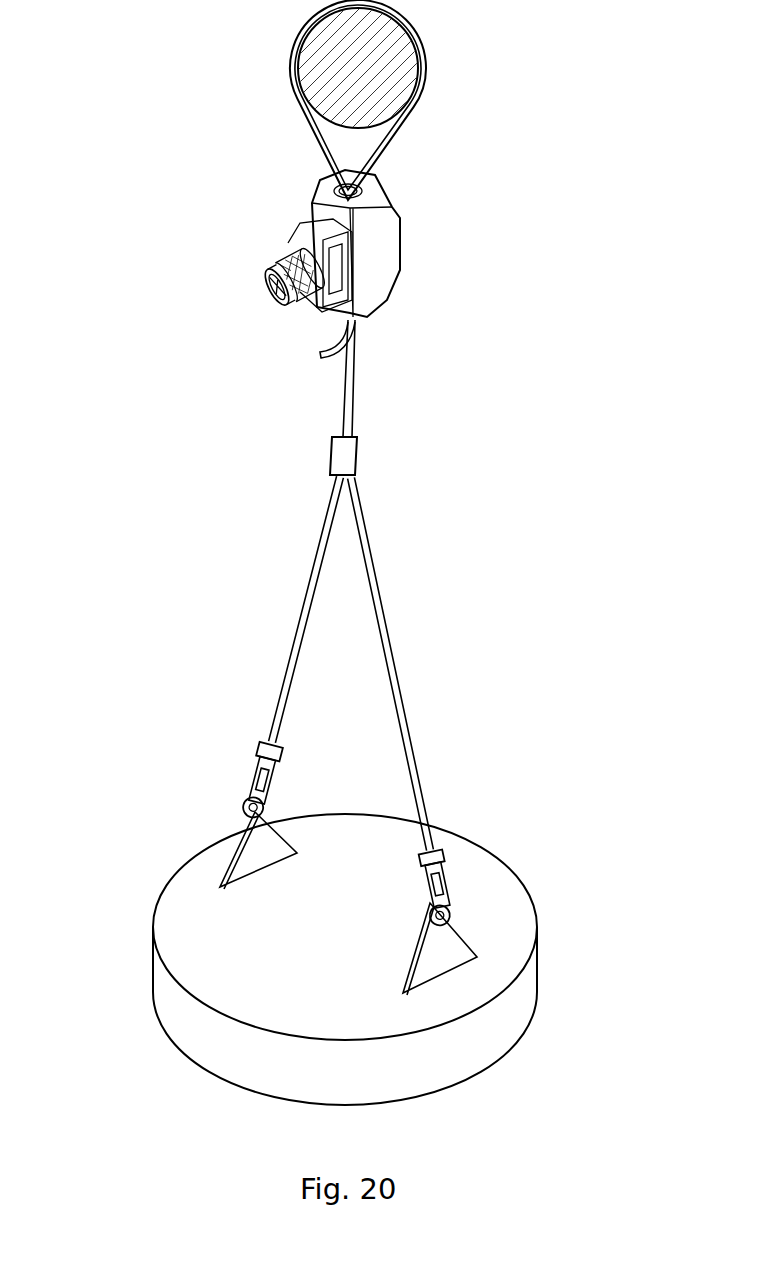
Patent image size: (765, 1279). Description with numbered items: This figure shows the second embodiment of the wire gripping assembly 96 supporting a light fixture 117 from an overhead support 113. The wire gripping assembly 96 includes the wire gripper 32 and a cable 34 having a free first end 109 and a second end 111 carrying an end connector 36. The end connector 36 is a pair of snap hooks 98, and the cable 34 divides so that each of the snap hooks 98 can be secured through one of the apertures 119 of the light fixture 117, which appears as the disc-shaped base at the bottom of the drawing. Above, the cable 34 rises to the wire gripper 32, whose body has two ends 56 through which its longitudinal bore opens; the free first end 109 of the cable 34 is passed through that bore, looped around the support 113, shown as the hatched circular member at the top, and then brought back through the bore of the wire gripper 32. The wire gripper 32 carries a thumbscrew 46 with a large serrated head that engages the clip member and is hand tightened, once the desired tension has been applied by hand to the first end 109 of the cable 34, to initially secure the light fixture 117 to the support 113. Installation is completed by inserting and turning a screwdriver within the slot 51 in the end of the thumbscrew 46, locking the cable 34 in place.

The wire gripping assembly 96 is at (128, 147).
The support 113 is at (370, 68).
The ends 56 is at (372, 193).
The wire gripper 32 is at (400, 245).
The thumbscrew 46 is at (290, 272).
The slot 51 is at (268, 288).
The free first end 109 is at (320, 355).
The cable 34 is at (356, 387).
The second end 111 is at (354, 487).
The end connector 36 is at (400, 686).
The snap hooks 98 is at (244, 784).
The apertures 119 is at (250, 822).
The light fixture 117 is at (537, 972).